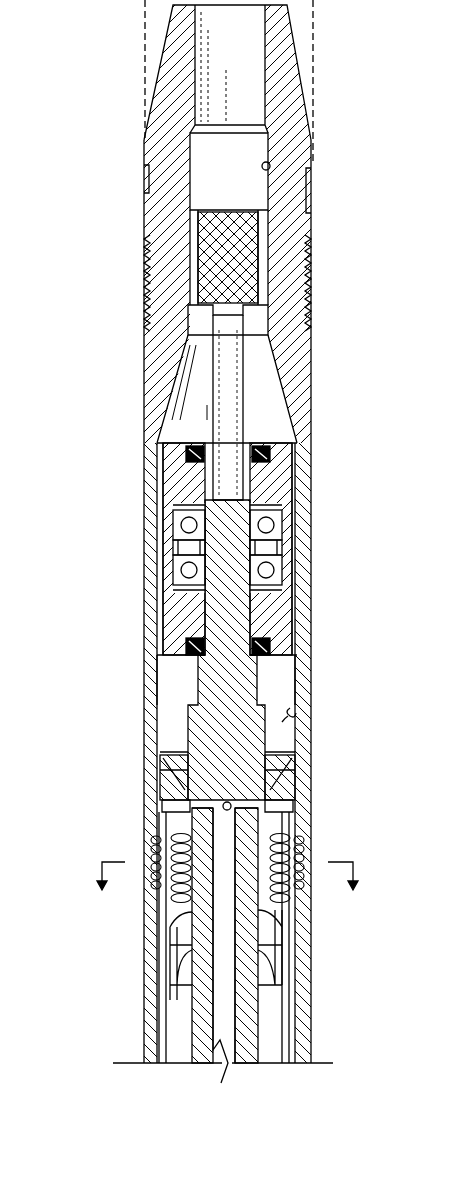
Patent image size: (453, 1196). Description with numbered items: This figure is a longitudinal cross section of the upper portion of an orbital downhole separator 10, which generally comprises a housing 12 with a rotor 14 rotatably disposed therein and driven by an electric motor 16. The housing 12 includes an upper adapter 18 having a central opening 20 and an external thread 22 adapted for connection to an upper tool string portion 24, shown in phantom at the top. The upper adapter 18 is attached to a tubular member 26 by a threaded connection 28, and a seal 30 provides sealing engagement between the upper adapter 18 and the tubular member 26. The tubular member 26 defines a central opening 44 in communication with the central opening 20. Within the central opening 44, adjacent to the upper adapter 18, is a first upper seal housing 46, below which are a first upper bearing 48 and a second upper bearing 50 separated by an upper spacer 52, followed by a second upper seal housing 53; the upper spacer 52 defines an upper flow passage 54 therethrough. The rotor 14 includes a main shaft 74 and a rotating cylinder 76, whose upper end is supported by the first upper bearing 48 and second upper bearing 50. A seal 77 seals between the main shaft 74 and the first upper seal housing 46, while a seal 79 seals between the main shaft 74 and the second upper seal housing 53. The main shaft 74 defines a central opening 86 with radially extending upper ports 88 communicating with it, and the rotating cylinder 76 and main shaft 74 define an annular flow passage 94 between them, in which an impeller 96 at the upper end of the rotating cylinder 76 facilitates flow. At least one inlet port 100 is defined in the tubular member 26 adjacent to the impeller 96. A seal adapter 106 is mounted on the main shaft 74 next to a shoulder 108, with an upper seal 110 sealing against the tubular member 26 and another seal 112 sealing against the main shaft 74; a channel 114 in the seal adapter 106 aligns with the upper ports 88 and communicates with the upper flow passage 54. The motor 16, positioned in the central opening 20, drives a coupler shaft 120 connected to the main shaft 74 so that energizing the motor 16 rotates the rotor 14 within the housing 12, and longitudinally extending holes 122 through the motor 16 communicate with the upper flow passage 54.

The orbital downhole separator 10 is at (125, 218).
The housing 12 is at (318, 410).
The rotor 14 is at (292, 1013).
The electric motor 16 is at (242, 252).
The upper adapter 18 is at (305, 135).
The central opening 20 is at (270, 165).
The external thread 22 is at (290, 40).
The upper tool string portion 24 is at (143, 48).
The tubular member 26 is at (305, 680).
The threaded connection 28 is at (308, 278).
The seal 30 is at (311, 365).
The central opening 44 is at (294, 713).
The first upper seal housing 46 is at (185, 448).
The first upper bearing 48 is at (187, 522).
The second upper bearing 50 is at (187, 568).
The upper spacer 52 is at (268, 548).
The second upper seal housing 53 is at (170, 620).
The upper flow passage 54 is at (293, 505).
The main shaft 74 is at (205, 722).
The rotating cylinder 76 is at (290, 980).
The seal 77 is at (264, 452).
The seal 79 is at (264, 645).
The central opening 86 is at (225, 1030).
The upper ports 88 is at (168, 797).
The annular flow passage 94 is at (276, 1055).
The impeller 96 is at (178, 940).
The inlet port 100 is at (292, 840).
The seal adapter 106 is at (235, 805).
The shoulder 108 is at (172, 775).
The upper seal 110 is at (290, 776).
The seal 112 is at (160, 832).
The channel 114 is at (295, 755).
The coupler shaft 120 is at (205, 370).
The longitudinally extending holes 122 is at (190, 266).